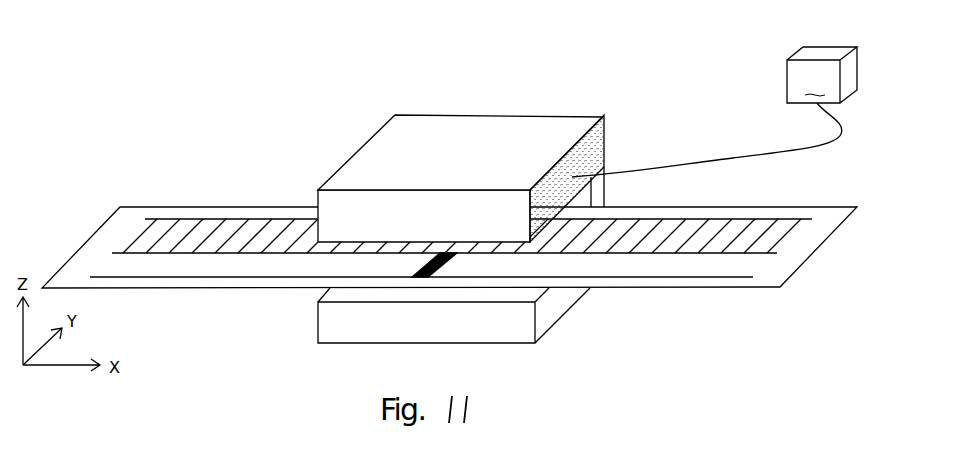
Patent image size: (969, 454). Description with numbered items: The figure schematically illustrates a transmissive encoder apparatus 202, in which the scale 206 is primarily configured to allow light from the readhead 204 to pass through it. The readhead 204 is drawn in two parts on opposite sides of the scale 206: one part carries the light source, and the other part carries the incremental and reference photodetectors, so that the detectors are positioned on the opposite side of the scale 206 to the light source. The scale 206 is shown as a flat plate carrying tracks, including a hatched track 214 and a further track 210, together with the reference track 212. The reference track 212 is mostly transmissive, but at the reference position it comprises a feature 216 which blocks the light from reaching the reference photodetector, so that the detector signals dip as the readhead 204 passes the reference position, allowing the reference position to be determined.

The transmissive encoder apparatus 202 is at (240, 57).
The readhead 204 is at (368, 148).
The scale 206 is at (130, 202).
The upper layer 210 is at (830, 243).
The reference track 212 is at (803, 278).
The hatched sample strip 214 is at (765, 221).
The feature 216 is at (452, 256).